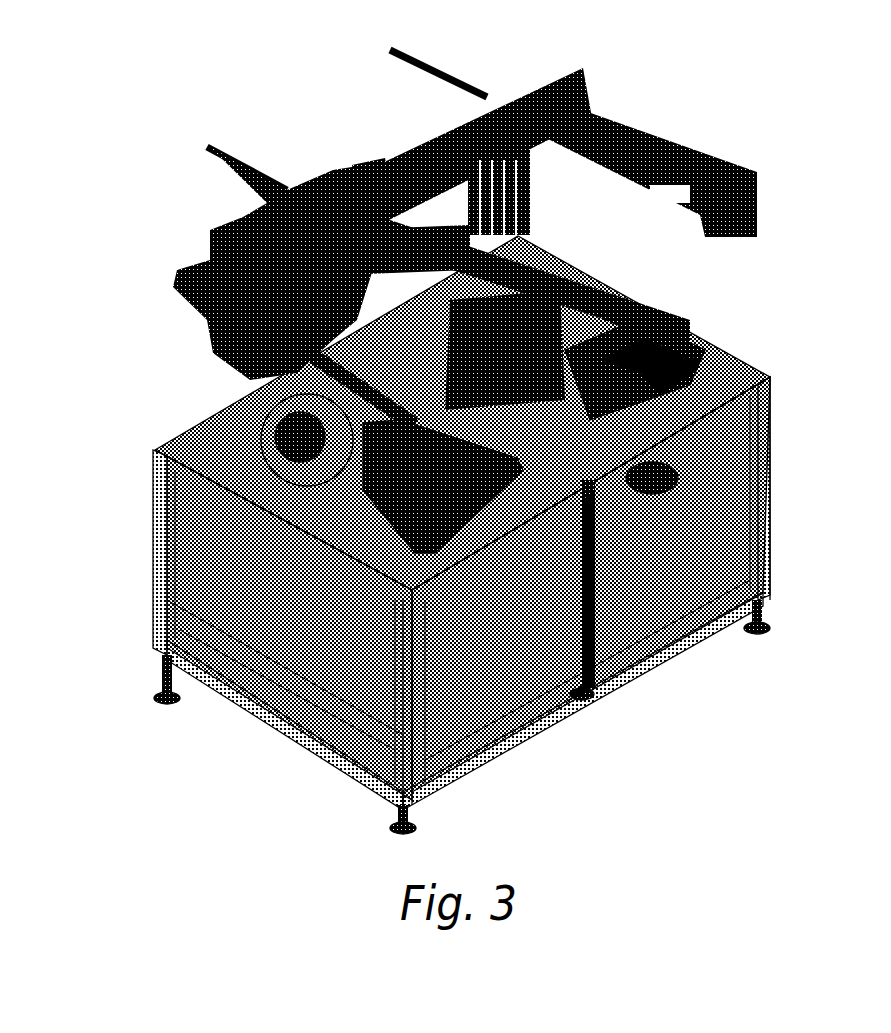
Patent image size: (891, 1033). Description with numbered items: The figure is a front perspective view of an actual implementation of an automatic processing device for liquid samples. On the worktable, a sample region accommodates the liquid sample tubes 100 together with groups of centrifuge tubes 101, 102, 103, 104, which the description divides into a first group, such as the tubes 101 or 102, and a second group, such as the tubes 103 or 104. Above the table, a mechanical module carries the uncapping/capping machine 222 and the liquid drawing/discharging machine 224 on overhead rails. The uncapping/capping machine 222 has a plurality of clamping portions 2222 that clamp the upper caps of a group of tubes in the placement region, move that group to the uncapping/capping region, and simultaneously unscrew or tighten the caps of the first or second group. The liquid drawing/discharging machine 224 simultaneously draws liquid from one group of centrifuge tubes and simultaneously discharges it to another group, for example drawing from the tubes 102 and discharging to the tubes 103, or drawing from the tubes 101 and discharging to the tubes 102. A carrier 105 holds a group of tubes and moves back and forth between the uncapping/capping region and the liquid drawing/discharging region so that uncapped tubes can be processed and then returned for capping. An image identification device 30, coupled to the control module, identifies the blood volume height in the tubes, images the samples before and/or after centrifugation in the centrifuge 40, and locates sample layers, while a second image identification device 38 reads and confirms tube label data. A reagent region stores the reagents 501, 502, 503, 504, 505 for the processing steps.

The liquid sample tubes 100 is at (157, 613).
The centrifuge tubes 101 is at (350, 758).
The centrifuge tubes 102 is at (497, 748).
The centrifuge tubes 103 is at (245, 693).
The centrifuge tubes 104 is at (287, 733).
The carrier 105 is at (157, 555).
The centrifuge 40 is at (157, 463).
The image identification device 38 is at (157, 510).
The image identification device 30 is at (373, 165).
The liquid drawing/discharging machine 224 is at (532, 173).
The uncapping/capping machine 222 is at (210, 342).
The clamping portions 2222 is at (243, 370).
The reagent 501 is at (770, 458).
The reagent 502 is at (770, 495).
The reagent 503 is at (677, 325).
The reagent 504 is at (697, 327).
The reagent 505 is at (710, 342).